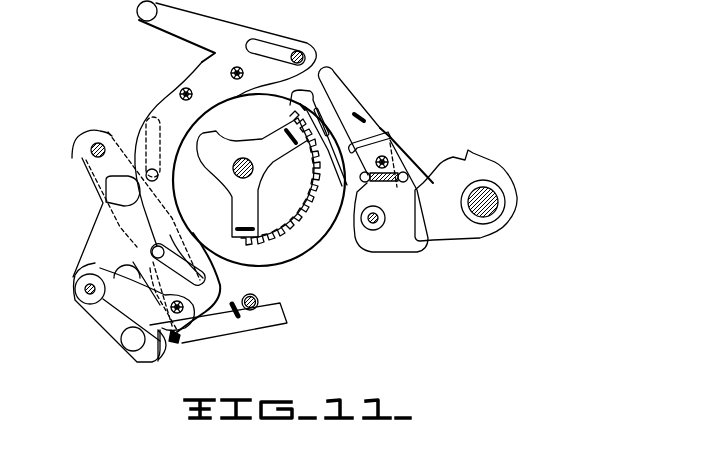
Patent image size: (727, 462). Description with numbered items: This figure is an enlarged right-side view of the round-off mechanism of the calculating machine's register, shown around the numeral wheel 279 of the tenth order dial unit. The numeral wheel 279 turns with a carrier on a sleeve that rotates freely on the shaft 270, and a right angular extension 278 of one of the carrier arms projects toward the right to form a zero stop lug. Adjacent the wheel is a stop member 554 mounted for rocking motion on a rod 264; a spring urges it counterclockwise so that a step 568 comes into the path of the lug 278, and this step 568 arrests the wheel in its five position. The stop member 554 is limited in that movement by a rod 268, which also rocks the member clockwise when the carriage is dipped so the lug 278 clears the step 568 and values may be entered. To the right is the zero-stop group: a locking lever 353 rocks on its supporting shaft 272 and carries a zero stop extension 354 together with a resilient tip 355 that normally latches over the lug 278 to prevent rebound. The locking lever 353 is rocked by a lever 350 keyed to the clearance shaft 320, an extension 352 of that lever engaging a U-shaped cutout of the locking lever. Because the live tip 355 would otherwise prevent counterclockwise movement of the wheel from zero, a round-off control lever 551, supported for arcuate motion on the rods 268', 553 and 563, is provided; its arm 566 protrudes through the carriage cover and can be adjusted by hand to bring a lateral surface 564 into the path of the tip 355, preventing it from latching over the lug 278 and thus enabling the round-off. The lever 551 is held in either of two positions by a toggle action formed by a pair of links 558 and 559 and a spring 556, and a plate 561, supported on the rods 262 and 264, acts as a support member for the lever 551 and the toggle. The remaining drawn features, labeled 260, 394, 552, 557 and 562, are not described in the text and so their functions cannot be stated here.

The pocket 260 is at (117, 192).
The rod 262 is at (84, 291).
The rod 264 is at (90, 152).
The rod 268 is at (235, 322).
The rod 268' is at (316, 34).
The shaft 270 is at (255, 171).
The supporting shaft 272 is at (368, 218).
The right angular extension 278 is at (292, 105).
The numeral wheel 279 is at (290, 248).
The clearance shaft 320 is at (493, 206).
The lever 350 is at (498, 172).
The extension 352 is at (447, 228).
The locking lever 353 is at (399, 240).
The zero stop extension 354 is at (380, 131).
The resilient tip 355 is at (341, 90).
The spring 394 is at (394, 151).
The round-off control lever 551 is at (202, 72).
The lever 552 is at (258, 42).
The rod 553 is at (150, 246).
The stop member 554 is at (225, 288).
The spring 556 is at (177, 340).
The hook 557 is at (157, 360).
The link 558 is at (113, 327).
The link 559 is at (113, 320).
The plate 561 is at (102, 220).
The edge 562 is at (203, 252).
The rod 563 is at (150, 130).
The lateral surface 564 is at (300, 88).
The arm 566 is at (136, 13).
The step 568 is at (180, 230).